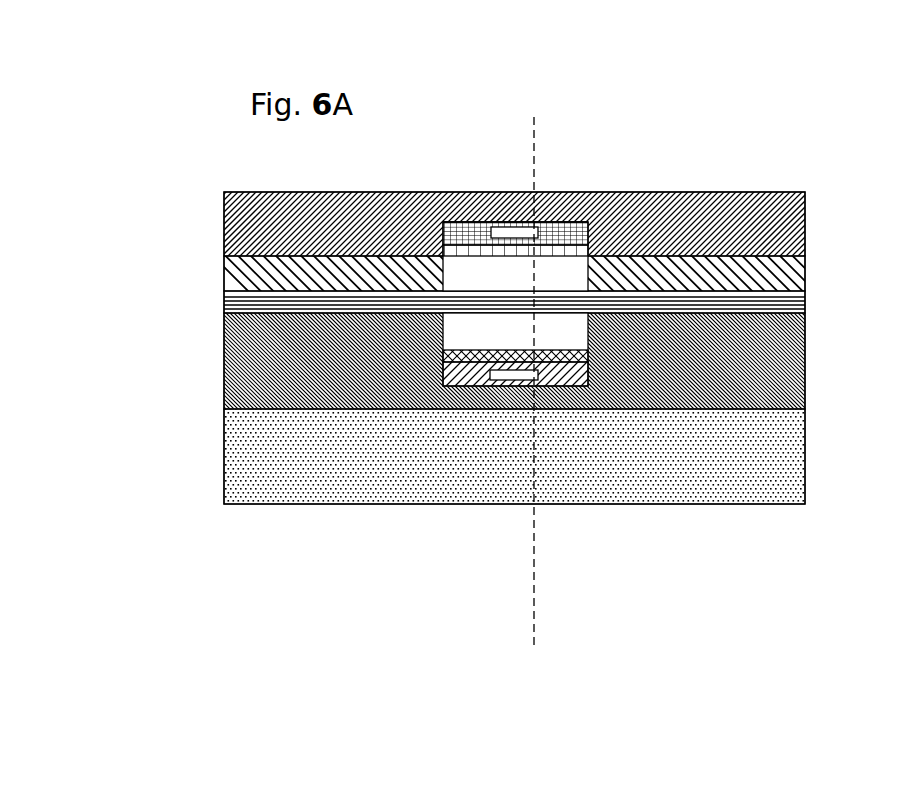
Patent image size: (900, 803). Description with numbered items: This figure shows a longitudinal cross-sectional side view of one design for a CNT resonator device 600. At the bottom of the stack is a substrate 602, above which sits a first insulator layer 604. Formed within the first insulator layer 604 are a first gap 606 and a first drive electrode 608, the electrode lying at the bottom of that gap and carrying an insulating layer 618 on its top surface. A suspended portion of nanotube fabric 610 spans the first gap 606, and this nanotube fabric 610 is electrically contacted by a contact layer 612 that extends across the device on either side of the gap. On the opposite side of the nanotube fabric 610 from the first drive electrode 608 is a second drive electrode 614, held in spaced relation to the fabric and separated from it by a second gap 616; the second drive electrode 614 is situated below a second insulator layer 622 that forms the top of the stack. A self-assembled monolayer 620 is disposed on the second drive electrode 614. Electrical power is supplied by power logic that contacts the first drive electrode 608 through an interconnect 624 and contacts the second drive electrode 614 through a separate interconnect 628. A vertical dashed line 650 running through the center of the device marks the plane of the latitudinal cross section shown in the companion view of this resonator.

The CNT resonator device 600 is at (515, 278).
The substrate 602 is at (203, 456).
The first insulator layer 604 is at (203, 362).
The first gap 606 is at (515, 349).
The first drive electrode 608 is at (565, 394).
The nanotube fabric 610 is at (203, 303).
The contact layer 612 is at (825, 276).
The second drive electrode 614 is at (565, 211).
The second gap 616 is at (515, 256).
The insulating layer 618 is at (468, 370).
The self-assembled monolayer 620 is at (468, 234).
The second insulator layer 622 is at (820, 212).
The interconnect 624 is at (515, 388).
The interconnect 628 is at (515, 219).
The dashed line 650 is at (552, 644).